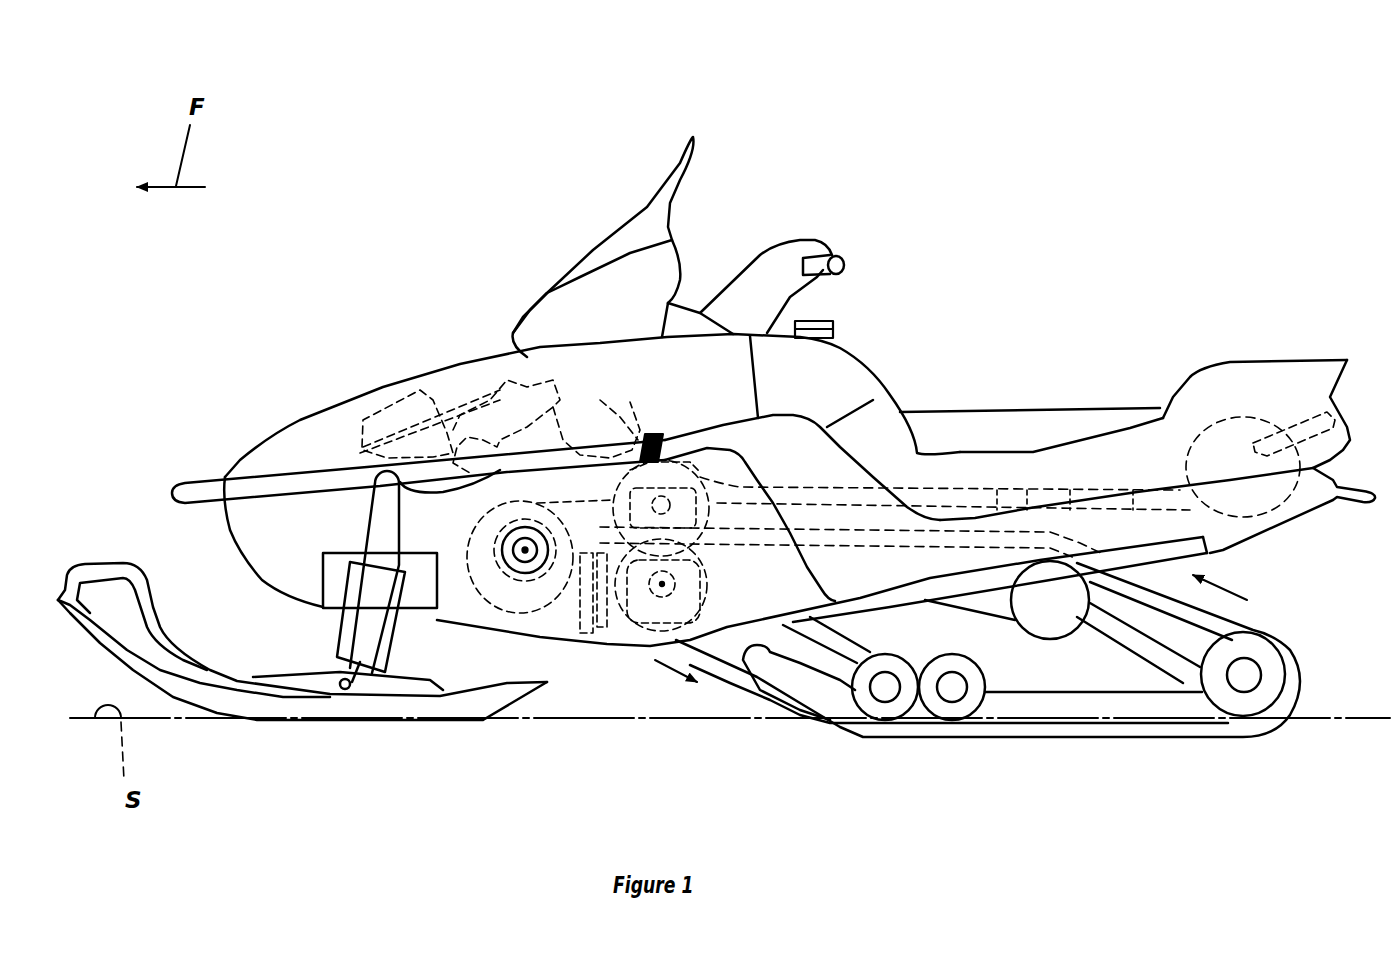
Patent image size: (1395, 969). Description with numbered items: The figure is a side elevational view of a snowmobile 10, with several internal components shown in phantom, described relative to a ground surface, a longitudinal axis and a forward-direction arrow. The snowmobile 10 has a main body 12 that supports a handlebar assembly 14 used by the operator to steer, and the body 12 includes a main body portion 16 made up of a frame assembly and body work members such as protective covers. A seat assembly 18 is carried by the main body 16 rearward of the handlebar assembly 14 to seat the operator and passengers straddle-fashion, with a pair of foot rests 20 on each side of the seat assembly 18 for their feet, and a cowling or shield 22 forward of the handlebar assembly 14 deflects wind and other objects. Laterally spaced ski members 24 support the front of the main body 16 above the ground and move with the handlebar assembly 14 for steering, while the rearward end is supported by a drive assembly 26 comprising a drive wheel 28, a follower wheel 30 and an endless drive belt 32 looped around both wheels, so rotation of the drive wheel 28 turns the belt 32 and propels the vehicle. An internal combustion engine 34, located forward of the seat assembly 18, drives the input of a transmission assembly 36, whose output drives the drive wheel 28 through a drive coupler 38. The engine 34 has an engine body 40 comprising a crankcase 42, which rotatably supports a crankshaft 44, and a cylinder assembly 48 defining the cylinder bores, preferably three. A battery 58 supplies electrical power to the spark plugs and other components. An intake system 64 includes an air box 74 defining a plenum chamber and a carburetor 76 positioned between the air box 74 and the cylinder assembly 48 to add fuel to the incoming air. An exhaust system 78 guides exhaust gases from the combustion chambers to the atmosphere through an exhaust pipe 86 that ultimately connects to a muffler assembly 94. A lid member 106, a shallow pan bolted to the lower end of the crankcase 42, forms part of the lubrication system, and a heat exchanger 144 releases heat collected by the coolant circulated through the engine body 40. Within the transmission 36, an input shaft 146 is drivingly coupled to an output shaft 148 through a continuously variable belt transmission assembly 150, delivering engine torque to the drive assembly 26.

The snowmobile 10 is at (1214, 213).
The main body 12 is at (892, 268).
The handlebar assembly 14 is at (833, 255).
The main body portion 16 is at (237, 460).
The seat assembly 18 is at (1046, 431).
The foot rests 20 is at (960, 578).
The shield 22 is at (645, 222).
The ski members 24 is at (265, 720).
The drive assembly 26 is at (1048, 740).
The drive wheel 28 is at (697, 580).
The follower wheel 30 is at (1235, 697).
The endless drive belt 32 is at (1127, 738).
The internal combustion engine 34 is at (560, 355).
The transmission assembly 36 is at (677, 450).
The drive coupler 38 is at (653, 640).
The engine body 40 is at (568, 382).
The crankcase 42 is at (415, 588).
The crankshaft 44 is at (520, 590).
The input shaft 146 is at (544, 657).
The cylinder assembly 48 is at (600, 397).
The battery 58 is at (710, 430).
The intake system 64 is at (370, 402).
The air box 74 is at (413, 392).
The carburetor 76 is at (478, 368).
The exhaust system 78 is at (1117, 488).
The exhaust pipe 86 is at (903, 490).
The muffler assembly 94 is at (1258, 418).
The lid member 106 is at (478, 612).
The heat exchanger 144 is at (585, 640).
The output shaft 148 is at (697, 453).
The continuously variable belt transmission assembly 150 is at (700, 410).